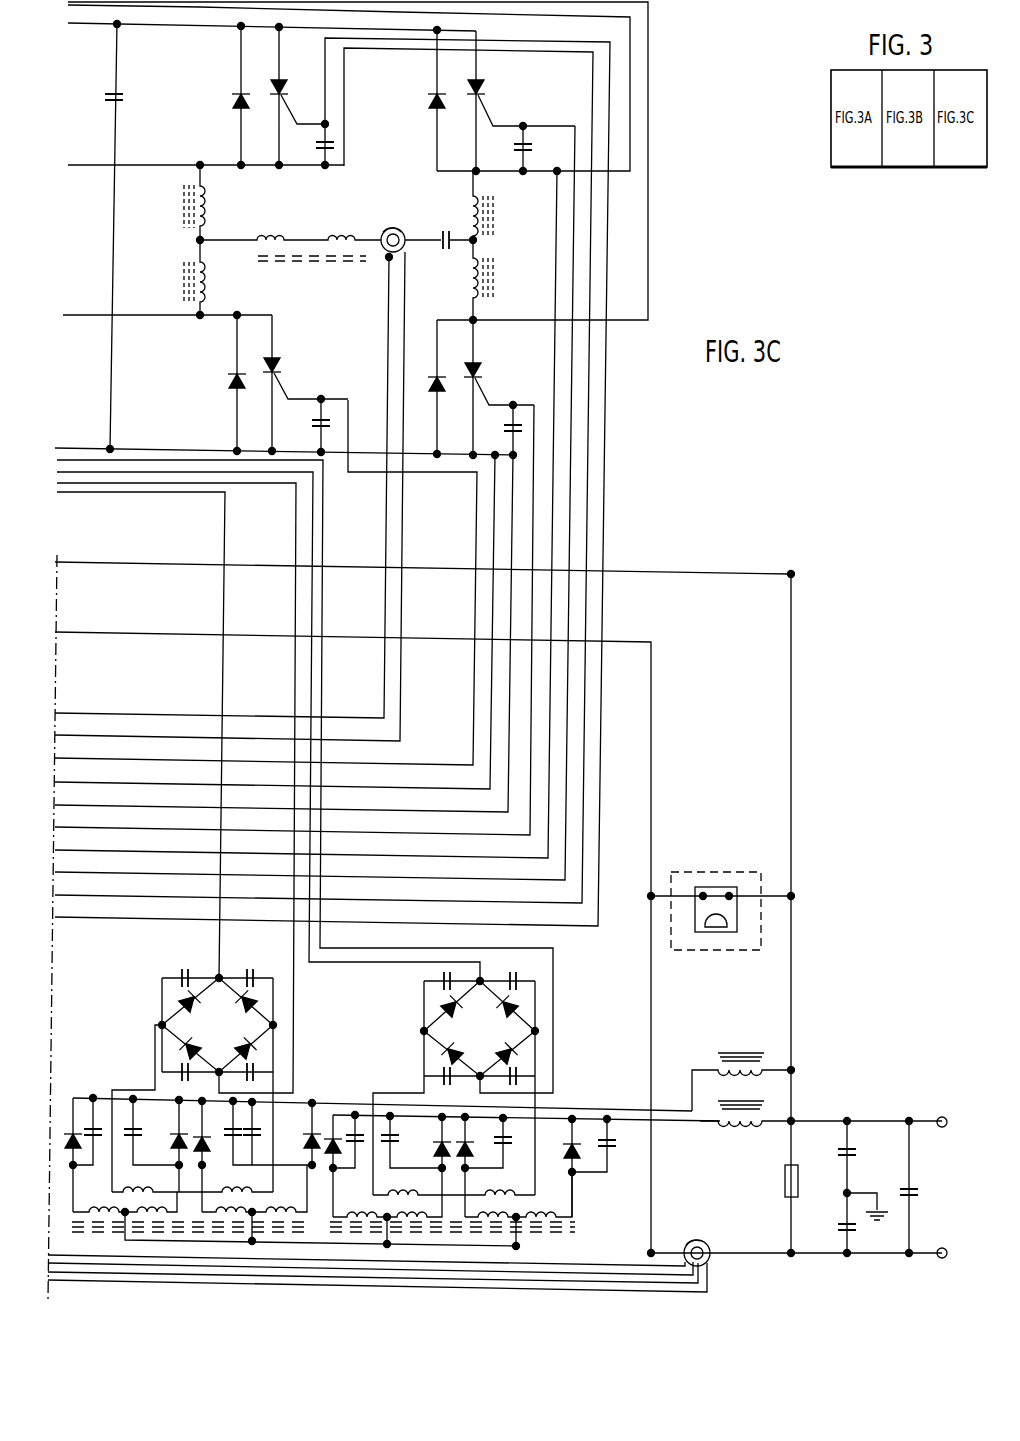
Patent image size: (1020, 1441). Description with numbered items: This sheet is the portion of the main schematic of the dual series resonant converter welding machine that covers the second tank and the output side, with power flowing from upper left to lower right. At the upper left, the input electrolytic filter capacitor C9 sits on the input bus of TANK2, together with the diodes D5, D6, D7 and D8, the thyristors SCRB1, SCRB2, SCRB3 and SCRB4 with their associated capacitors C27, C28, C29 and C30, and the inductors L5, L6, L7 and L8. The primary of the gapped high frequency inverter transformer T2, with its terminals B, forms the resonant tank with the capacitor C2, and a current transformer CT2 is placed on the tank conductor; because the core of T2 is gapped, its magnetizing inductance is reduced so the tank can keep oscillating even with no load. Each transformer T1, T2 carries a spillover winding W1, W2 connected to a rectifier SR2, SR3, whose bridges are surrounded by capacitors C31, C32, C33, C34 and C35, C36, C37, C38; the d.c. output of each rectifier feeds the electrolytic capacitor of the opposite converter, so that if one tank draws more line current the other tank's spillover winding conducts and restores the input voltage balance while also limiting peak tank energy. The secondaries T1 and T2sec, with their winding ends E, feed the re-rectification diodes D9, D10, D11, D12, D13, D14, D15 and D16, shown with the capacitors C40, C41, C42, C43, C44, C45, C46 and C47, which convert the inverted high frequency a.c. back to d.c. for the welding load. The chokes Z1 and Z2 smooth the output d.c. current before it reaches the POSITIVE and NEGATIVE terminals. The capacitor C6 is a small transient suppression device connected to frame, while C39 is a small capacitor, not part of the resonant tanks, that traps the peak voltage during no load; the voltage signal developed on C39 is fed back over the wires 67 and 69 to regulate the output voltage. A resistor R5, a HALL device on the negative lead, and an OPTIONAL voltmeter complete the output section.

The wire 69 is at (82, 562).
The wire 67 is at (82, 632).
The input electrolytic capacitor C9 is at (124, 236).
The diode D5 is at (229, 95).
The thyristor SCRB1 is at (299, 96).
The capacitor C27 is at (312, 143).
The diode D6 is at (424, 100).
The thyristor SCRB3 is at (501, 101).
The capacitor C29 is at (544, 147).
The inductor L5 is at (205, 202).
The inductor L6 is at (205, 277).
The inductor L7 is at (469, 205).
The inductor L8 is at (469, 280).
The high frequency inverter transformer T2 is at (290, 239).
The winding terminals B is at (304, 227).
The Tank 2 TANK2 is at (366, 301).
The current transformer CT2 is at (394, 230).
The capacitor C2 is at (439, 232).
The diode D7 is at (224, 383).
The thyristor SCRB2 is at (296, 383).
The capacitor C28 is at (313, 424).
The diode D8 is at (443, 387).
The thyristor SCRB4 is at (495, 387).
The capacitor C30 is at (504, 429).
The optional voltmeter OPTIONAL is at (721, 923).
The choke Z2 is at (743, 1069).
The choke Z1 is at (747, 1103).
The positive output terminal POSITIVE is at (933, 1102).
The negative output terminal NEGATIVE is at (923, 1275).
The resistor R5 is at (780, 1211).
The transient suppression capacitor C6 is at (863, 1187).
The small capacitor C39 is at (920, 1187).
The hall device HALL is at (388, 1243).
The rectifier SR2 is at (205, 1018).
The capacitor C31 is at (190, 966).
The capacitor C32 is at (246, 966).
The capacitor C33 is at (190, 1063).
The capacitor C34 is at (246, 1063).
The rectifier SR3 is at (480, 1030).
The capacitor C35 is at (442, 976).
The capacitor C36 is at (508, 976).
The capacitor C37 is at (452, 1068).
The capacitor C38 is at (507, 1068).
The re-rectification diode D9 is at (67, 1155).
The capacitor C40 is at (87, 1115).
The capacitor C41 is at (149, 1115).
The re-rectification diode D10 is at (171, 1146).
The re-rectification diode D11 is at (213, 1156).
The capacitor C42 is at (238, 1101).
The capacitor C43 is at (256, 1104).
The re-rectification diode D12 is at (302, 1136).
The spillover winding W1 is at (192, 1180).
The high frequency inverter transformer T1 is at (285, 1208).
The winding ends E is at (318, 1190).
The re-rectification diode D13 is at (345, 1166).
The capacitor C44 is at (343, 1106).
The capacitor C45 is at (378, 1106).
The re-rectification diode D14 is at (434, 1156).
The re-rectification diode D15 is at (476, 1167).
The capacitor C46 is at (508, 1123).
The re-rectification diode D16 is at (563, 1168).
The capacitor C47 is at (612, 1120).
The spillover winding W2 is at (454, 1183).
The secondary of transformer T2 T2sec is at (477, 1211).